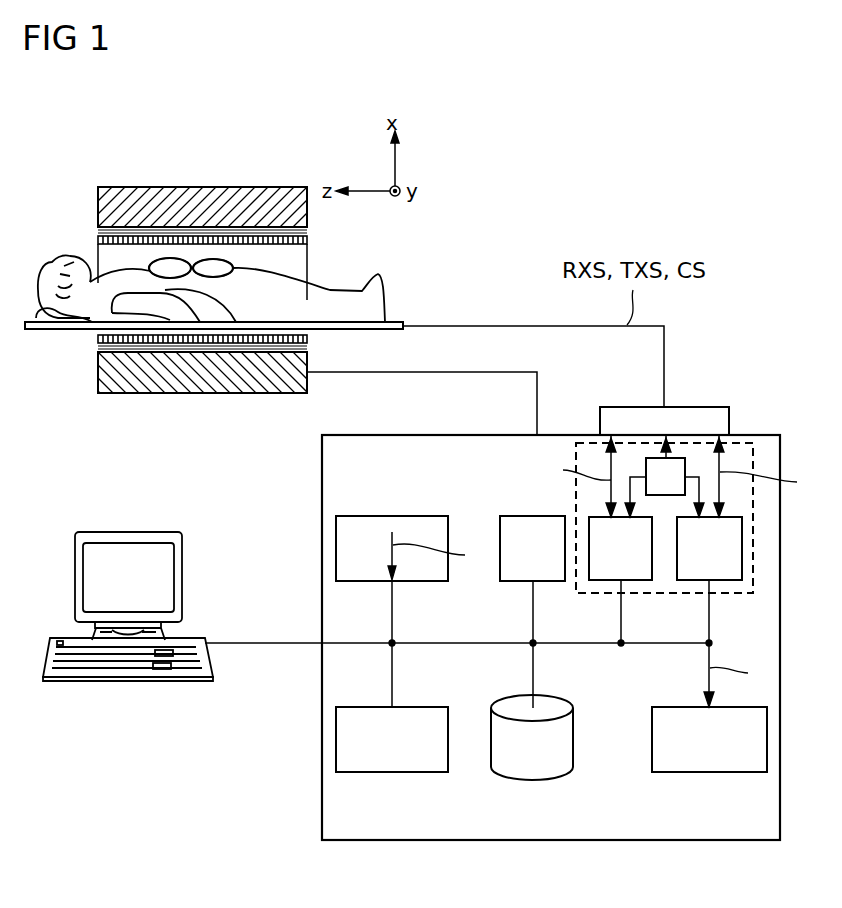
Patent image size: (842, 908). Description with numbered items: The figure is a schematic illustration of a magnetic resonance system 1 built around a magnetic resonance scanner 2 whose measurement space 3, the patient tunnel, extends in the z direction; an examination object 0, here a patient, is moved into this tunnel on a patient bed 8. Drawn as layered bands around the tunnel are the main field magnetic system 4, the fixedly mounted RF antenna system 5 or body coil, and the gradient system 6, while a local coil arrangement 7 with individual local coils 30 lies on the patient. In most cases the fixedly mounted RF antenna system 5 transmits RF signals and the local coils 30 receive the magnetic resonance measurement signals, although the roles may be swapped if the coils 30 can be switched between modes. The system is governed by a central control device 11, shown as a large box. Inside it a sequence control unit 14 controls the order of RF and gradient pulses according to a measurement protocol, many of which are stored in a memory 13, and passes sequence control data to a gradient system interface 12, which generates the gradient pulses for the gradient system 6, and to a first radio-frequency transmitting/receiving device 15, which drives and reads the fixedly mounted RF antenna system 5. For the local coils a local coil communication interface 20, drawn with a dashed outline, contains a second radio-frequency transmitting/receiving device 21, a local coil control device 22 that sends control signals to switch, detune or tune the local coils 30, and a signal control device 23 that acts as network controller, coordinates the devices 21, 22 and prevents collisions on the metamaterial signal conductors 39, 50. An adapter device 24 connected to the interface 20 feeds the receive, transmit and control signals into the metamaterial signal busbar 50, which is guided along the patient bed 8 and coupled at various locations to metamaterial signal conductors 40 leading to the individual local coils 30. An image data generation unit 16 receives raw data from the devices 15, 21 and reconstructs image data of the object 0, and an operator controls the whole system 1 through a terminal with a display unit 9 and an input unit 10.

The examination object 0 is at (62, 322).
The magnetic resonance system 1 is at (596, 141).
The magnetic resonance scanner 2 is at (106, 180).
The measurement space 3 is at (306, 266).
The main field magnetic system 4 is at (245, 200).
The fixedly mounted RF antenna system 5 is at (140, 240).
The gradient system 6 is at (192, 230).
The local coil arrangement 7 is at (150, 280).
The patient bed 8 is at (398, 322).
The display unit 9 is at (130, 532).
The input unit 10 is at (133, 680).
The central control device 11 is at (473, 840).
The gradient system interface 12 is at (390, 772).
The memory 13 is at (533, 767).
The sequence control unit 14 is at (393, 516).
The first radio-frequency transmitting/receiving device 15 is at (515, 581).
The image data generation unit 16 is at (712, 772).
The local coil communication interface 20 is at (753, 515).
The second radio-frequency transmitting/receiving device 21 is at (600, 580).
The local coil control device 22 is at (742, 550).
The signal control device 23 is at (677, 458).
The adapter device 24 is at (632, 407).
The local coils 30 is at (140, 268).
The metamaterial signal conductors 39 is at (212, 277).
The metamaterial signal conductors 40 is at (213, 268).
The metamaterial signal busbar 50 is at (493, 325).